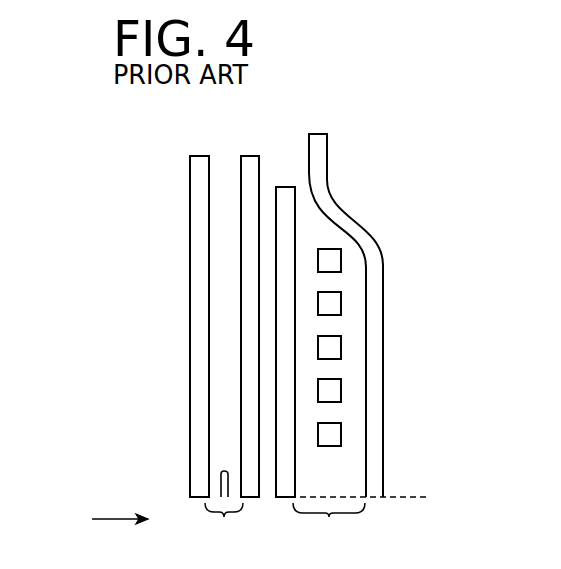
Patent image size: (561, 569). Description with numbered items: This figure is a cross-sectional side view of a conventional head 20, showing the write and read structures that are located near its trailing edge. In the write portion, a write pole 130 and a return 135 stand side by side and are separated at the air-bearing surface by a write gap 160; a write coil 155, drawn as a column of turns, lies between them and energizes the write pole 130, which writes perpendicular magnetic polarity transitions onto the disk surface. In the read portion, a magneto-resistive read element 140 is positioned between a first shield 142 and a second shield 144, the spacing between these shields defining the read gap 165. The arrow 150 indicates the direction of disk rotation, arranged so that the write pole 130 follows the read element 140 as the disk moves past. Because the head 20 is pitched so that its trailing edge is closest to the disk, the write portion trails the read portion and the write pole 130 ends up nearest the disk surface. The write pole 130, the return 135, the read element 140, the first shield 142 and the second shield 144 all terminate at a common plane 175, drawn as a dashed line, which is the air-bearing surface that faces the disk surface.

The head 20 is at (416, 188).
The write pole 130 is at (383, 390).
The return 135 is at (284, 187).
The magneto-resistive read element 140 is at (224, 471).
The first shield 142 is at (241, 383).
The second shield 144 is at (190, 336).
The arrow 150 is at (108, 518).
The write coil 155 is at (341, 258).
The write gap 160 is at (329, 525).
The read gap 165 is at (224, 525).
The common plane 175 is at (406, 497).